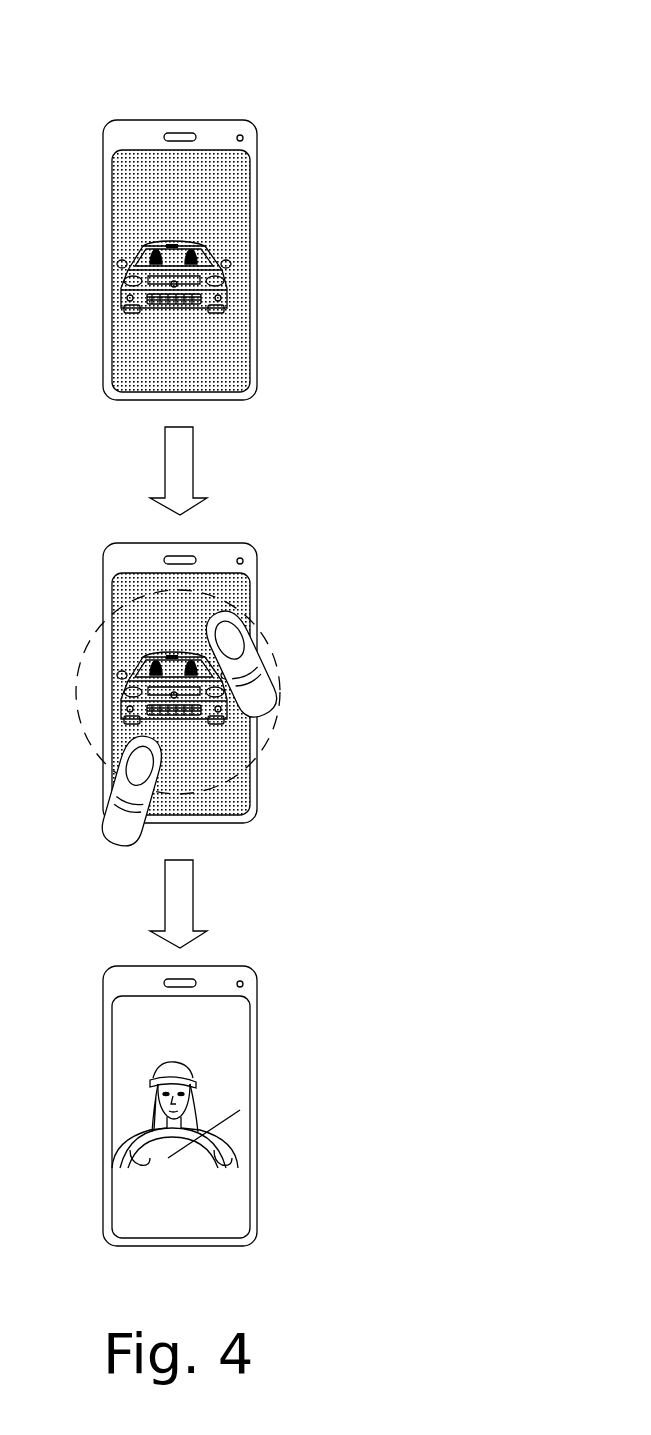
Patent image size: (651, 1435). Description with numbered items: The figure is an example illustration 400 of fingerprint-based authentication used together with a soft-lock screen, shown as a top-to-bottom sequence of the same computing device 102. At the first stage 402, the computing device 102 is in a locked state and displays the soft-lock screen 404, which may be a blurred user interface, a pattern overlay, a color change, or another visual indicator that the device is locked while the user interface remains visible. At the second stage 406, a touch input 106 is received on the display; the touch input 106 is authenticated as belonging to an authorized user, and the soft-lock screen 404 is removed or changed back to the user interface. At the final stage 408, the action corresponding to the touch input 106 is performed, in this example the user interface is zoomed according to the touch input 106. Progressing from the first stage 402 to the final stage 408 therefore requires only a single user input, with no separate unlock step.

The example illustration 400 is at (518, 62).
The locked state stage 402 is at (178, 238).
The computing device 102 is at (253, 125).
The soft-lock screen 404 is at (222, 235).
The touch input stage 406 is at (200, 674).
The touch input 106 is at (277, 668).
The action performed stage 408 is at (98, 957).